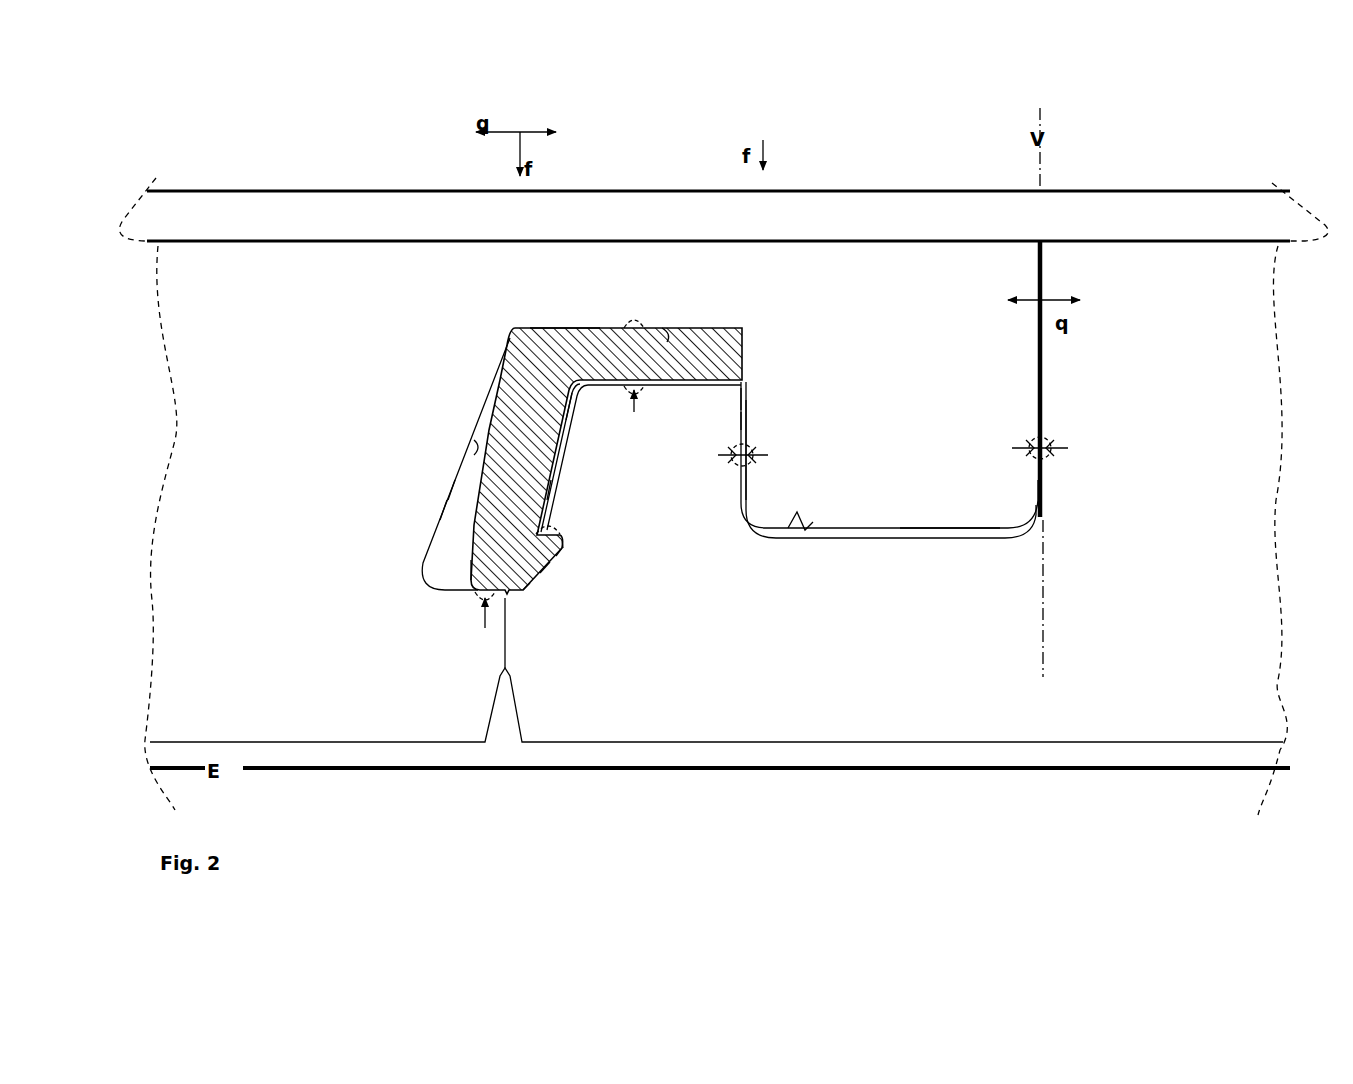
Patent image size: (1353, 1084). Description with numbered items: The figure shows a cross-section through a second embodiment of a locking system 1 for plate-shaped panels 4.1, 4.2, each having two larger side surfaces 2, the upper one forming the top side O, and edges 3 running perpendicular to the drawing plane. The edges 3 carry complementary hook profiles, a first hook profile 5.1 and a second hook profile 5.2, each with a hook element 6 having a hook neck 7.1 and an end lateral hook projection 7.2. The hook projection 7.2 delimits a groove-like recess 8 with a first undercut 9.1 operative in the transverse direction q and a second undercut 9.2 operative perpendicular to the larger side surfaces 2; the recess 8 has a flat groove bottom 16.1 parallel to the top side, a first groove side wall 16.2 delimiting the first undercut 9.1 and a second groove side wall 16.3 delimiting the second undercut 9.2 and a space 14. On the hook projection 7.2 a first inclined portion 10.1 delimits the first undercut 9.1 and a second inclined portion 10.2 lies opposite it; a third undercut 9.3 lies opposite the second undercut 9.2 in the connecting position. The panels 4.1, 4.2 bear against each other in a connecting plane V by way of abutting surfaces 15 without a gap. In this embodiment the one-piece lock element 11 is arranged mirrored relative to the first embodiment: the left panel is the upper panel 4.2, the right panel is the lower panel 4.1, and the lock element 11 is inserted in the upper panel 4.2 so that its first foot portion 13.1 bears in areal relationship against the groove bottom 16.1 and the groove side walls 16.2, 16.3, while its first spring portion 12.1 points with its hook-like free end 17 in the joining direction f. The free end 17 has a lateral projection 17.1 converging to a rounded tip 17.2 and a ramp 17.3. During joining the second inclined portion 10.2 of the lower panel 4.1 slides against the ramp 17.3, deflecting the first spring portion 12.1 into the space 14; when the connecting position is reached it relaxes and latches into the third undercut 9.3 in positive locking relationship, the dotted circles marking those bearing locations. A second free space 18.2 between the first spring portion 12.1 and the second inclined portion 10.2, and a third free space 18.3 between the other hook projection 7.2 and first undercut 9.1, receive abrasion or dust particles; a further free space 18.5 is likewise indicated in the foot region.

The locking system 1 is at (127, 182).
The larger side surface 2 is at (228, 190).
The edge 3 is at (947, 175).
The lower panel 4.1 is at (1184, 160).
The upper panel 4.2 is at (903, 166).
The first hook profile 5.1 is at (1076, 190).
The second hook profile 5.2 is at (1003, 189).
The hook element 6 is at (683, 192).
The hook neck 7.1 is at (634, 322).
The hook projection 7.2 is at (684, 504).
The recess 8 is at (452, 490).
The first undercut 9.1 is at (567, 422).
The second undercut 9.2 is at (447, 508).
The third undercut 9.3 is at (567, 540).
The first inclined portion 10.1 is at (746, 402).
The second inclined portion 10.2 is at (545, 447).
The lock element 11 is at (508, 326).
The first spring portion 12.1 is at (492, 385).
The first foot portion 13.1 is at (562, 325).
The space 14 is at (453, 517).
The abutting surface 15 is at (1034, 272).
The groove bottom 16.1 is at (666, 333).
The first groove side wall 16.2 is at (742, 420).
The second groove side wall 16.3 is at (473, 447).
The free end 17 is at (467, 564).
The lateral projection 17.1 is at (540, 588).
The rounded tip 17.2 is at (578, 549).
The ramp 17.3 is at (546, 578).
The second free space 18.2 is at (565, 400).
The third free space 18.3 is at (975, 540).
The fifth wall section 18.5 is at (566, 556).